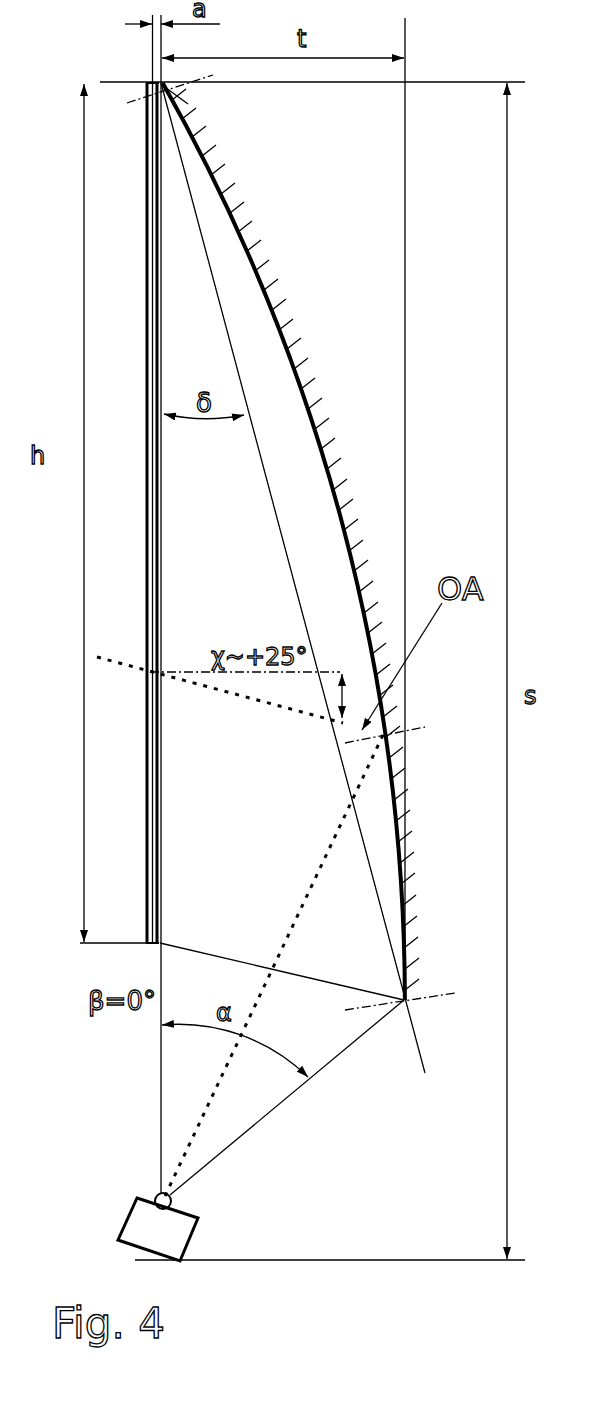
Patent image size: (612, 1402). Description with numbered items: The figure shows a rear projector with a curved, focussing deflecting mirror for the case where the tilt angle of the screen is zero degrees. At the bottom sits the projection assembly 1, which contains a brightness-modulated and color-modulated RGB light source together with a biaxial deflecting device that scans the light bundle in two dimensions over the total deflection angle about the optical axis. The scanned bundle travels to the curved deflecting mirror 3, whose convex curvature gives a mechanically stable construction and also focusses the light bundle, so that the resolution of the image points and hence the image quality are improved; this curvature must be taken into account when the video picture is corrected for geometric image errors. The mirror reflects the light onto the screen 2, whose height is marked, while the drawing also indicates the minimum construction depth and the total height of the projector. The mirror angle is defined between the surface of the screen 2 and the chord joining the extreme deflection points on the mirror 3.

The projection assembly 1 is at (196, 1225).
The screen 2 is at (145, 742).
The curved deflecting mirror 3 is at (322, 430).